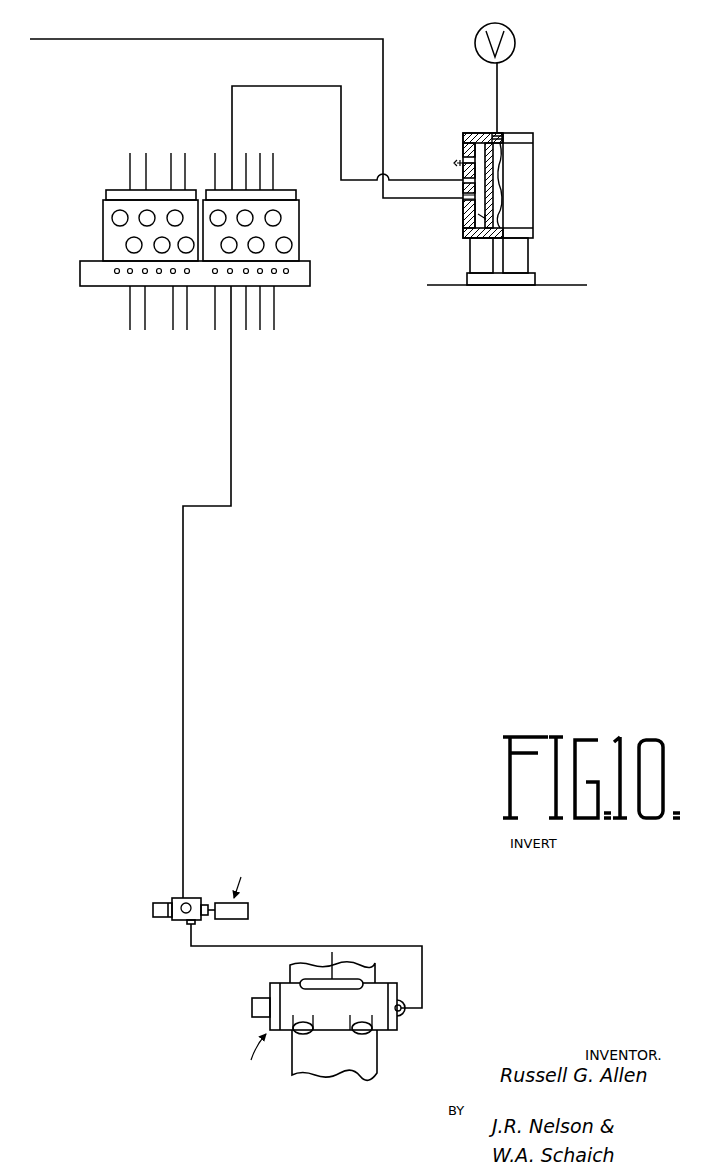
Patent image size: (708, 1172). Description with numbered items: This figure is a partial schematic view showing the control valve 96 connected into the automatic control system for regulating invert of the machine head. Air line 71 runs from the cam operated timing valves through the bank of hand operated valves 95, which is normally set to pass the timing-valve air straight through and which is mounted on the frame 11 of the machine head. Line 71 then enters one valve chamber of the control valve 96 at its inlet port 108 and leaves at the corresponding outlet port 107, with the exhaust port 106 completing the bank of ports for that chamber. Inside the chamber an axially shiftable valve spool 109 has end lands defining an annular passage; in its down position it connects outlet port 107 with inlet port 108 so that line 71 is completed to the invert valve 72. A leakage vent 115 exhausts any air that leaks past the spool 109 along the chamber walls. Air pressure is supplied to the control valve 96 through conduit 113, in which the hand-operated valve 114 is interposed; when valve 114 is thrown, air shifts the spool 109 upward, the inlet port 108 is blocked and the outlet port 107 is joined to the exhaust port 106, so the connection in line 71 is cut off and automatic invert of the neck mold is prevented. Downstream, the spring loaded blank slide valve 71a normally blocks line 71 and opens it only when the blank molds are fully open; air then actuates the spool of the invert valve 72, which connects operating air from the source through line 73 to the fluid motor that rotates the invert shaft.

The air line 71 is at (192, 39).
The blank slide valve 71a is at (190, 903).
The invert valve 72 is at (401, 1019).
The line 73 is at (332, 952).
The bank of hand operated valves 95 is at (103, 219).
The frame 11 is at (80, 268).
The hand-operated valve 114 is at (477, 33).
The conduit 113 is at (503, 100).
The control valve 96 is at (541, 183).
The exhaust port 106 is at (477, 163).
The outlet port 107 is at (491, 180).
The inlet port 108 is at (463, 200).
The leakage vent 115 is at (463, 217).
The valve spool 109 is at (465, 243).